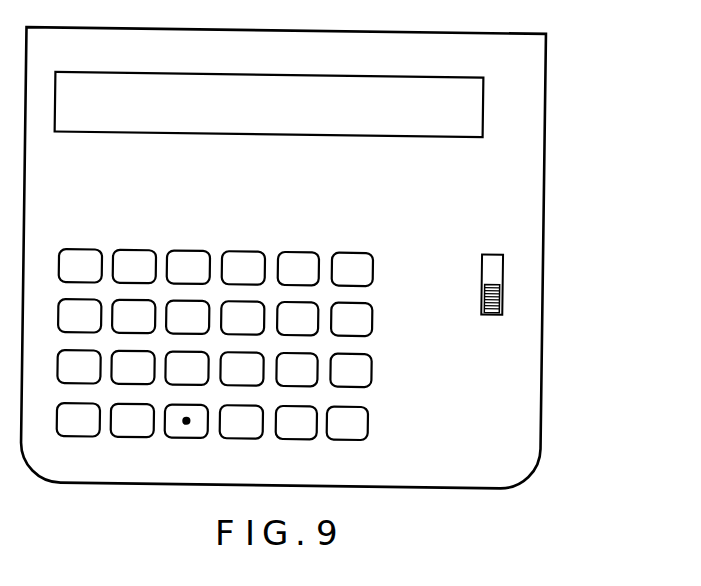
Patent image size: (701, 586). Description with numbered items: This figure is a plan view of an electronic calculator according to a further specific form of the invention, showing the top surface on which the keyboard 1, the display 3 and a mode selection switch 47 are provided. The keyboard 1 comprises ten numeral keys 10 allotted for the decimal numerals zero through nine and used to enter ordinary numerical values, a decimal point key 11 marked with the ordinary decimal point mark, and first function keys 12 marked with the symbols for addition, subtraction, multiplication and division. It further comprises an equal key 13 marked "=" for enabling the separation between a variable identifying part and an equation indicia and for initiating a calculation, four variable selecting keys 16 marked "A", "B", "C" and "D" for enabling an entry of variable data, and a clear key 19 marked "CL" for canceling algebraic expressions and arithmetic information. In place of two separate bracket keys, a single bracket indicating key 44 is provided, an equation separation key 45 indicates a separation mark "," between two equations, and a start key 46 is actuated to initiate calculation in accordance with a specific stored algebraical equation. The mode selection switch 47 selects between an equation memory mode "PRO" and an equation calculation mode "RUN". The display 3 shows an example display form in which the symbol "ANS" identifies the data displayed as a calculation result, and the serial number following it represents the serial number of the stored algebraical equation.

The keyboard 1 is at (237, 330).
The display 3 is at (313, 75).
The numeral keys 10 is at (145, 253).
The decimal point key 11 is at (196, 436).
The first function keys 12 is at (304, 255).
The equal key 13 is at (247, 437).
The variable selecting keys 16 is at (75, 252).
The clear key 19 is at (372, 272).
The single bracket indicating key 44 is at (370, 333).
The equation separation key 45 is at (369, 385).
The start key 46 is at (370, 430).
The mode selection switch 47 is at (513, 290).